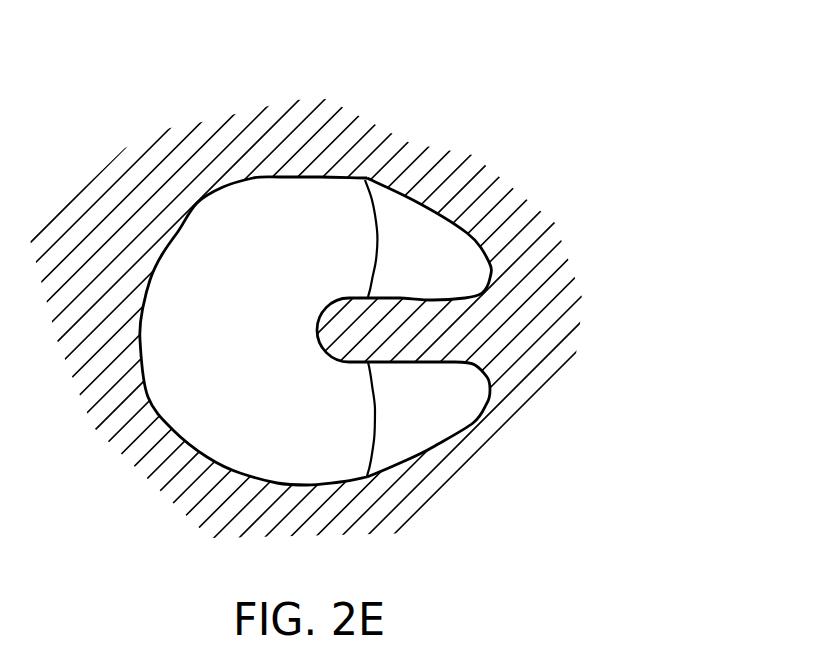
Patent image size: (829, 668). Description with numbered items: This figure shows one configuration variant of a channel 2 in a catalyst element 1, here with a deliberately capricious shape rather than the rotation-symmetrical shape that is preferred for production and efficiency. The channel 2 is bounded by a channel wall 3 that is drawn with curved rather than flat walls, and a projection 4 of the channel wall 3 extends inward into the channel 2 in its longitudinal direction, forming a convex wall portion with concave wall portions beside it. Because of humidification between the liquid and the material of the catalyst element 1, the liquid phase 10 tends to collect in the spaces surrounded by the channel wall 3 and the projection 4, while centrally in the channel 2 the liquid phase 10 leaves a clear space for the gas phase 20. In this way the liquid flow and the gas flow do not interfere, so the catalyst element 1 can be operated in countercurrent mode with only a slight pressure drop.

The catalyst element 1 is at (394, 100).
The channel 2 is at (196, 365).
The channel wall 3 is at (272, 178).
The projection 4 is at (315, 331).
The liquid phase 10 is at (443, 405).
The gas phase 20 is at (333, 465).